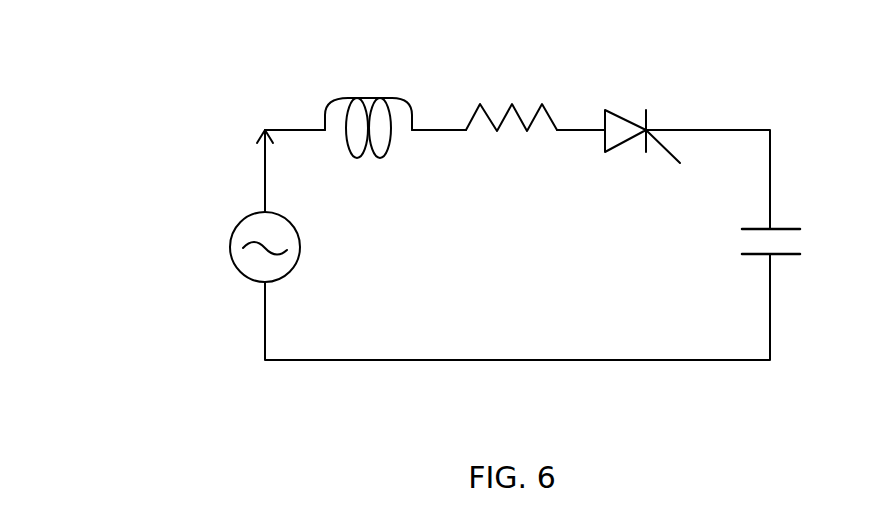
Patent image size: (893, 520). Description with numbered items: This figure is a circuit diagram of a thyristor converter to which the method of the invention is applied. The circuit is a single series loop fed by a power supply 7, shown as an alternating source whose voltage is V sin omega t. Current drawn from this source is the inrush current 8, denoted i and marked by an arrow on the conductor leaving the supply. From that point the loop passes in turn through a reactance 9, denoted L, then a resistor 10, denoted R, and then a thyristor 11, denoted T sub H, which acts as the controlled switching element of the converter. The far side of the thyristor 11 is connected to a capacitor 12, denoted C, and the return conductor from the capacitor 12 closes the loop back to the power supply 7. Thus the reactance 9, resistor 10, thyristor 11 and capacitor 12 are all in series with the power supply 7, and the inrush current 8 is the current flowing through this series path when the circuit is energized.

The power supply 7 is at (222, 243).
The inrush current 8 is at (251, 137).
The reactance 9 is at (369, 93).
The resistor 10 is at (517, 138).
The thyristor 11 is at (631, 97).
The capacitor 12 is at (802, 245).